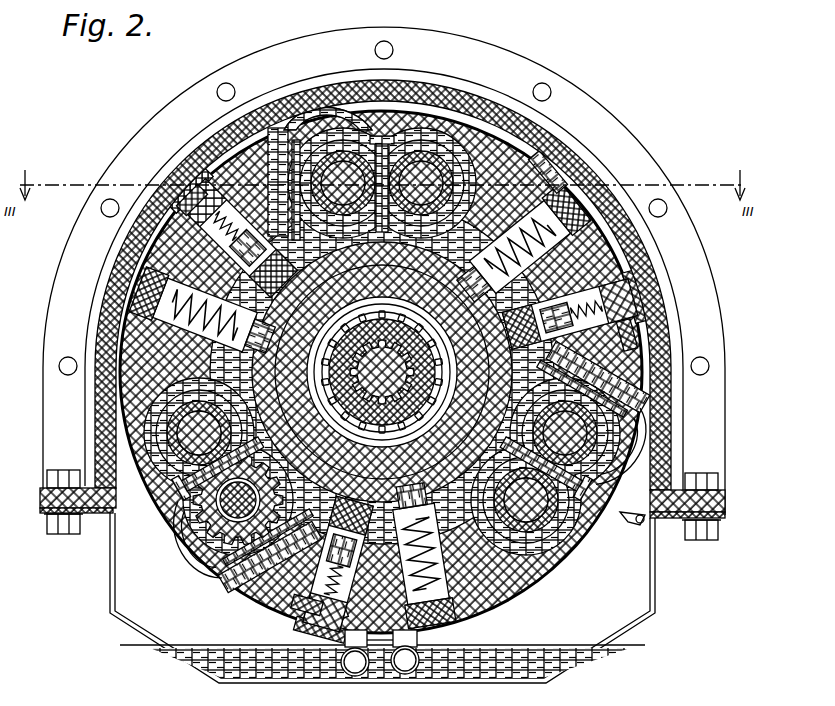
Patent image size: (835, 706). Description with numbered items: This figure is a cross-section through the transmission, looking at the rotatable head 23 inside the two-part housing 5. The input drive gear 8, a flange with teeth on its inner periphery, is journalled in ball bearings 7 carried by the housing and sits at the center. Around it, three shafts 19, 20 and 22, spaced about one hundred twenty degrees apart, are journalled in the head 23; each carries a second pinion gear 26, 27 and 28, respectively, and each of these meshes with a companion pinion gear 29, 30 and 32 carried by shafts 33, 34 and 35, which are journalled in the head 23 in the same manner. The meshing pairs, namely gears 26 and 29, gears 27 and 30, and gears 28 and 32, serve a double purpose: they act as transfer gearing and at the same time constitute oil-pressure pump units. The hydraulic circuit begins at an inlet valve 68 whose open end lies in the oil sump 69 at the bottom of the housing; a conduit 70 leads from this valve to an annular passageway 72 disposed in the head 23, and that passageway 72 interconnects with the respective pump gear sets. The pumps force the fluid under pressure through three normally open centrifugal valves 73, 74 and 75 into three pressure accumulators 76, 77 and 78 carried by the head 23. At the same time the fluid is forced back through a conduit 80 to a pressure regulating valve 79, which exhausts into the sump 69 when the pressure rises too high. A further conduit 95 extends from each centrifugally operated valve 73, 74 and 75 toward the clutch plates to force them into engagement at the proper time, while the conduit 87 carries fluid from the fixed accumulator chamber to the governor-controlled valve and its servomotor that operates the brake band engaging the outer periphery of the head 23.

The housing 5 is at (585, 190).
The ball bearings 7 is at (455, 408).
The input drive gear 8 is at (398, 468).
The shaft 19 is at (300, 158).
The shaft 20 is at (225, 542).
The shaft 22 is at (620, 440).
The head 23 is at (440, 180).
The second pinion gear 26 is at (345, 130).
The second pinion gear 27 is at (200, 520).
The second pinion gear 28 is at (600, 428).
The pinion gear 29 is at (425, 150).
The pinion gear 30 is at (180, 437).
The pinion gear 32 is at (560, 522).
The shaft 33 is at (470, 190).
The shaft 34 is at (196, 418).
The shaft 35 is at (540, 556).
The inlet valve 68 is at (410, 656).
The oil sump 69 is at (575, 662).
The conduit 70 is at (404, 675).
The annular passageway 72 is at (255, 362).
The centrifugal valve 73 is at (200, 212).
The centrifugal valve 74 is at (303, 605).
The centrifugal valve 75 is at (615, 303).
The pressure accumulator 76 is at (150, 332).
The pressure accumulator 77 is at (458, 608).
The pressure accumulator 78 is at (560, 187).
The pressure regulating valve 79 is at (350, 648).
The conduit 80 is at (358, 675).
The conduit 87 is at (638, 520).
The conduit 95 is at (245, 165).